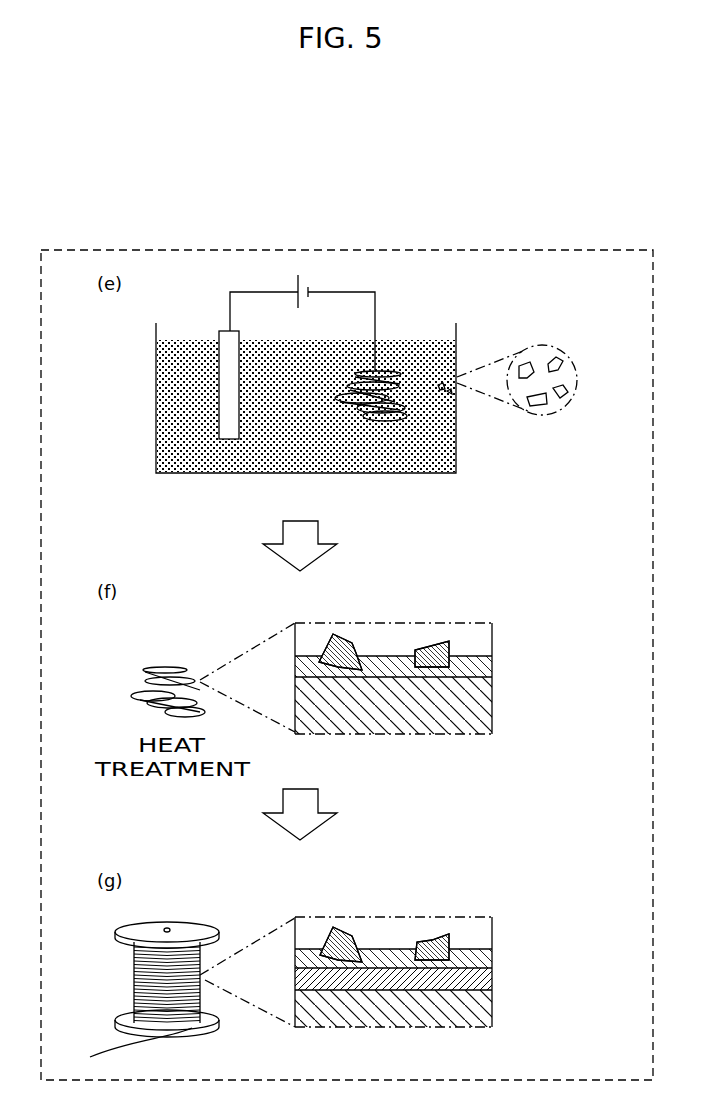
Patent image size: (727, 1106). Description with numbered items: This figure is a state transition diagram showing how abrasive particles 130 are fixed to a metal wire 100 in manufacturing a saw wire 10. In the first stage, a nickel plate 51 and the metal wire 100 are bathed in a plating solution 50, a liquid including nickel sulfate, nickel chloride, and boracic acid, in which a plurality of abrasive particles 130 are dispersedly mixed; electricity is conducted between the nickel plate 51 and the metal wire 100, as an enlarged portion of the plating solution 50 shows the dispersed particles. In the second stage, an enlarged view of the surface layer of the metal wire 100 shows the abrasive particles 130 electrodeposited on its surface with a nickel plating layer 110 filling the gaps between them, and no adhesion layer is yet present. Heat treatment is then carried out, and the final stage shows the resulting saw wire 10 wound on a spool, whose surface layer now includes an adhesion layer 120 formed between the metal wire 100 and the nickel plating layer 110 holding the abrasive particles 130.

The saw wire 10 is at (133, 975).
The plating solution 50 is at (435, 452).
The nickel plate 51 is at (219, 417).
The metal wire 100 is at (400, 388).
The nickel plating layer 110 is at (478, 666).
The adhesion layer 120 is at (478, 978).
The abrasive particles 130 is at (533, 363).